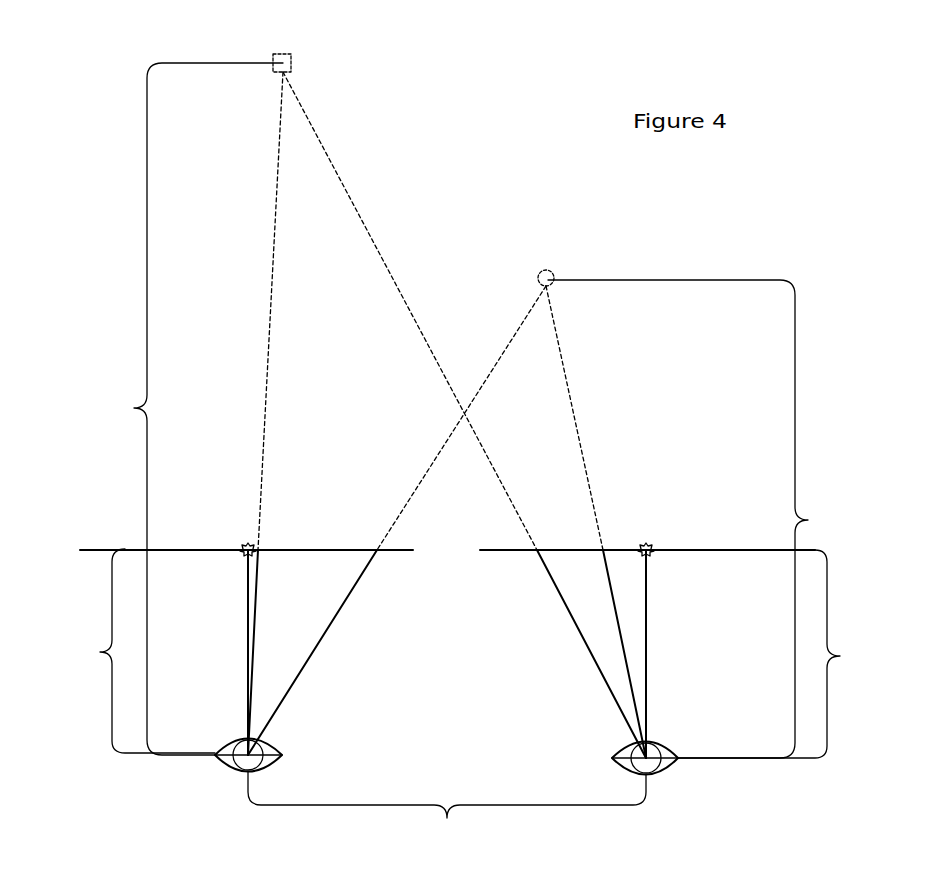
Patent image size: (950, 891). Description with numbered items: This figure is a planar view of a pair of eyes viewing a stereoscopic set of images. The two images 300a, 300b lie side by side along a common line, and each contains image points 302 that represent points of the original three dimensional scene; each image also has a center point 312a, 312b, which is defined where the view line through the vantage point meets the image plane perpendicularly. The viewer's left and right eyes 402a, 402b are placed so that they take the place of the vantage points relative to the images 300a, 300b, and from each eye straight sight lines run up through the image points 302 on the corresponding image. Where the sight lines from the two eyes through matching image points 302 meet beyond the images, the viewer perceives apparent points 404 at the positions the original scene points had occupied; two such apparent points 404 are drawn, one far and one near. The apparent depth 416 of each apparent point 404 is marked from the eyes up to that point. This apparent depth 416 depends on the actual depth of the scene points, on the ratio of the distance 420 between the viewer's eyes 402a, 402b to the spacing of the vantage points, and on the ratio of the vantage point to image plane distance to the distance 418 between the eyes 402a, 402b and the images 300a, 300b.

The image 300a is at (408, 553).
The image 300b is at (487, 553).
The image point 302 is at (300, 520).
The center point 312a is at (244, 549).
The center point 312b is at (652, 549).
The eye 402a is at (296, 752).
The eye 402b is at (611, 758).
The apparent point 404 is at (280, 62).
The apparent depth 416 is at (472, 410).
The distance between the viewer's eyes and images 418 is at (471, 653).
The distance between the viewer's eyes 420 is at (447, 812).